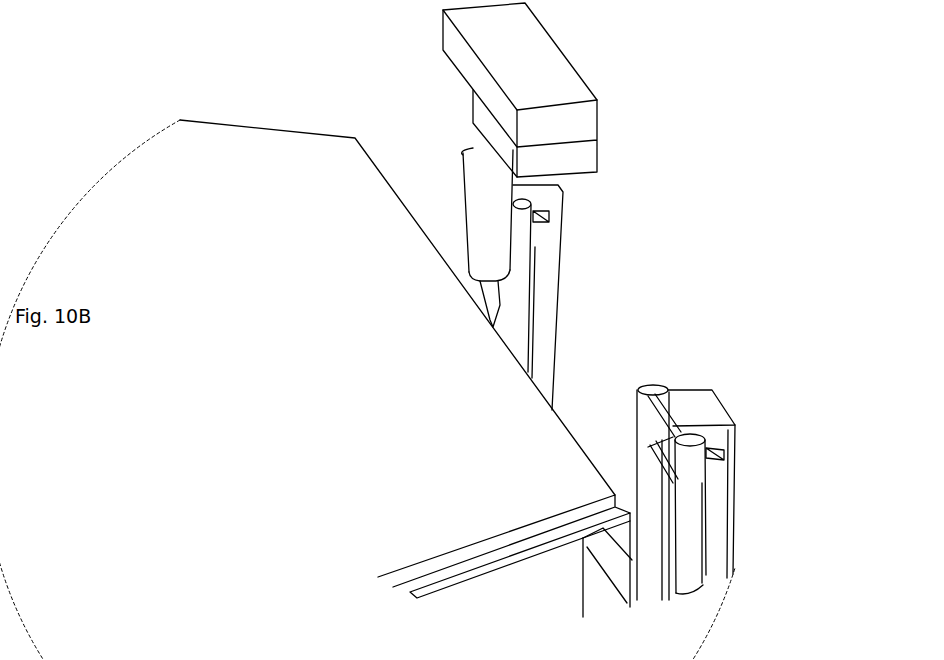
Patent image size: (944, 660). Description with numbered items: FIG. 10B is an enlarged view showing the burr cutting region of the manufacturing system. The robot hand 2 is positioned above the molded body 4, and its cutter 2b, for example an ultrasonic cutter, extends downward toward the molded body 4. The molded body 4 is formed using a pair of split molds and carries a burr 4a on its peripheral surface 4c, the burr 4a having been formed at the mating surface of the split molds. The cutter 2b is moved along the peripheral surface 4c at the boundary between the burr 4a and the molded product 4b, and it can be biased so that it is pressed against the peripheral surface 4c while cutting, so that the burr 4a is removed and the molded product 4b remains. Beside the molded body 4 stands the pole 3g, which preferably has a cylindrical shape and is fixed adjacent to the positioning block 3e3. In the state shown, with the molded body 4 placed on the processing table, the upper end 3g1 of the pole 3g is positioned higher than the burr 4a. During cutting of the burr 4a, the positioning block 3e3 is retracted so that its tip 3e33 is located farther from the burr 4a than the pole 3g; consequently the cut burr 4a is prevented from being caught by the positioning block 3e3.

The robot hand 2 is at (607, 92).
The cutter 2b is at (483, 187).
The molded body 4 is at (193, 186).
The molded product 4b is at (178, 250).
The burr 4a is at (427, 583).
The peripheral surface 4c is at (537, 528).
The positioning block 3e3 is at (747, 497).
The tip 3e33 is at (655, 418).
The pole 3g is at (688, 538).
The upper end 3g1 is at (692, 438).